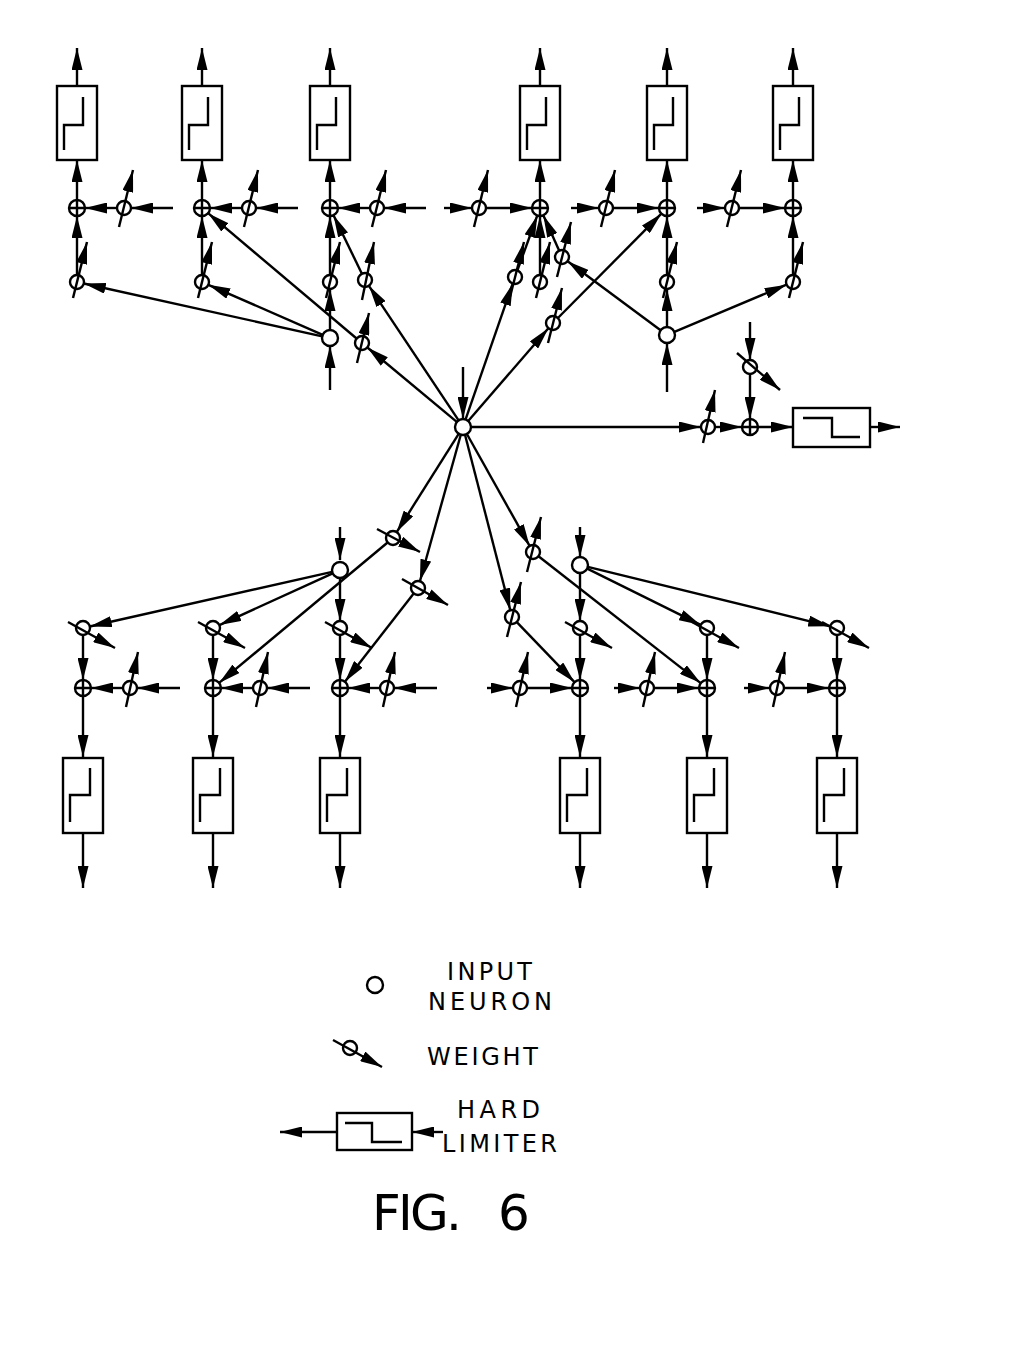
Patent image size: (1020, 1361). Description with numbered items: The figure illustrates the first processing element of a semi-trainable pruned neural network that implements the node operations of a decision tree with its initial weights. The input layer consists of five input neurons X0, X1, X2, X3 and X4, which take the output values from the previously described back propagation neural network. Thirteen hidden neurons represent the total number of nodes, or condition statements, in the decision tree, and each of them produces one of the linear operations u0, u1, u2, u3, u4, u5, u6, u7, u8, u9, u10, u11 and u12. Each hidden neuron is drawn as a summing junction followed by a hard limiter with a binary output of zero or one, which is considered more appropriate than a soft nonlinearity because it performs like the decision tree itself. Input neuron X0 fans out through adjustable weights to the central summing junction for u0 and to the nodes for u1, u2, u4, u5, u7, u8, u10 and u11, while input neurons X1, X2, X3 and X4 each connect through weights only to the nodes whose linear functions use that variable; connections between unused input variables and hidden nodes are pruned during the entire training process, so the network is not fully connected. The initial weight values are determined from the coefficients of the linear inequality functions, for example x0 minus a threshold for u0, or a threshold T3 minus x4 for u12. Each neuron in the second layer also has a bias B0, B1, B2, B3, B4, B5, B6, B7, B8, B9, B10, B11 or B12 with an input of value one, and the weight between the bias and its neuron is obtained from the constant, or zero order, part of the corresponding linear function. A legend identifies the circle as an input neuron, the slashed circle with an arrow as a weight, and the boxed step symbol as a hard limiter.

The linear operation u0 is at (687, 411).
The linear operation u1 is at (541, 155).
The linear operation u2 is at (668, 155).
The linear operation u3 is at (794, 155).
The linear operation u4 is at (331, 155).
The linear operation u5 is at (203, 155).
The linear operation u6 is at (78, 155).
The linear operation u7 is at (586, 780).
The linear operation u8 is at (713, 780).
The linear operation u9 is at (843, 780).
The linear operation u10 is at (343, 780).
The linear operation u11 is at (216, 780).
The linear operation u12 is at (86, 780).
The bias B0 is at (766, 370).
The bias B1 is at (488, 198).
The bias B2 is at (615, 198).
The bias B3 is at (741, 198).
The bias B4 is at (382, 198).
The bias B5 is at (254, 198).
The bias B6 is at (129, 198).
The bias B7 is at (527, 687).
The bias B8 is at (654, 687).
The bias B9 is at (784, 687).
The bias B10 is at (397, 687).
The bias B11 is at (270, 687).
The bias B12 is at (140, 687).
The input neuron X0 is at (465, 380).
The input neuron X1 is at (656, 361).
The input neuron X2 is at (319, 363).
The input neuron X3 is at (578, 535).
The input neuron X4 is at (339, 538).